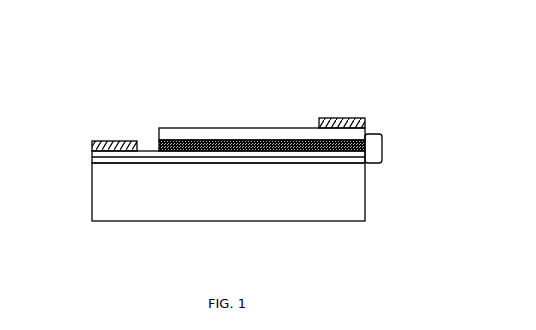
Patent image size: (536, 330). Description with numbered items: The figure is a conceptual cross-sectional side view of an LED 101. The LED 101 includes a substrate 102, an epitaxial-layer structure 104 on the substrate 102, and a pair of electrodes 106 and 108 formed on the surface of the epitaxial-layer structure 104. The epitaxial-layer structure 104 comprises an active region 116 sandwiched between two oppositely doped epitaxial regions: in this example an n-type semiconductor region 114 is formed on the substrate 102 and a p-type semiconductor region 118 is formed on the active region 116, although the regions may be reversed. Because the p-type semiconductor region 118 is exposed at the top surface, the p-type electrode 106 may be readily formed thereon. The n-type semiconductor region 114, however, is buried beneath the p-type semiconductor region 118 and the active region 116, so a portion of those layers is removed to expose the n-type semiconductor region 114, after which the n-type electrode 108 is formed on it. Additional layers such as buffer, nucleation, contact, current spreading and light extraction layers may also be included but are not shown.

The LED 101 is at (117, 48).
The substrate 102 is at (240, 199).
The epitaxial-layer structure 104 is at (382, 149).
The p-type electrode 106 is at (366, 123).
The n-type electrode 108 is at (92, 149).
The n-type semiconductor region 114 is at (91, 157).
The active region 116 is at (159, 141).
The p-type semiconductor region 118 is at (159, 130).